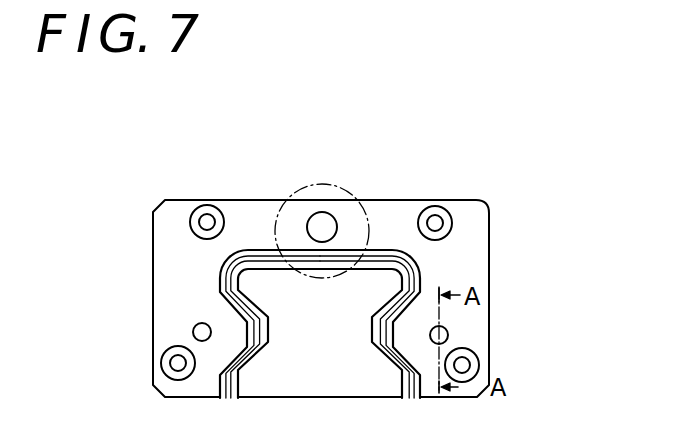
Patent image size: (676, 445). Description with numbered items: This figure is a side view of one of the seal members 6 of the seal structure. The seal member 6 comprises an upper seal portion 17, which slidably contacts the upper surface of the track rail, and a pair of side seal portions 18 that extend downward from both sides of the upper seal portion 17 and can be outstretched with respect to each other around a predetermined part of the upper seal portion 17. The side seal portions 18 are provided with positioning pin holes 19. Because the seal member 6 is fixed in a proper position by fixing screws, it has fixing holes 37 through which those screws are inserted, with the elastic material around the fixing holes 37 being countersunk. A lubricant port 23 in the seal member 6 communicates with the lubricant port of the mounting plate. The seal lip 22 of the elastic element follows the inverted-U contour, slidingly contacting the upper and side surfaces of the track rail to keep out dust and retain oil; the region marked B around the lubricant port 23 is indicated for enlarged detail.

The seal member 6 is at (237, 199).
The upper seal portion 17 is at (263, 220).
The side seal portions 18 is at (177, 275).
The positioning pin holes 19 is at (193, 332).
The seal lip 22 is at (273, 340).
The lubricant port 23 is at (324, 222).
The fixing holes 37 is at (205, 218).
The detail region B is at (382, 218).